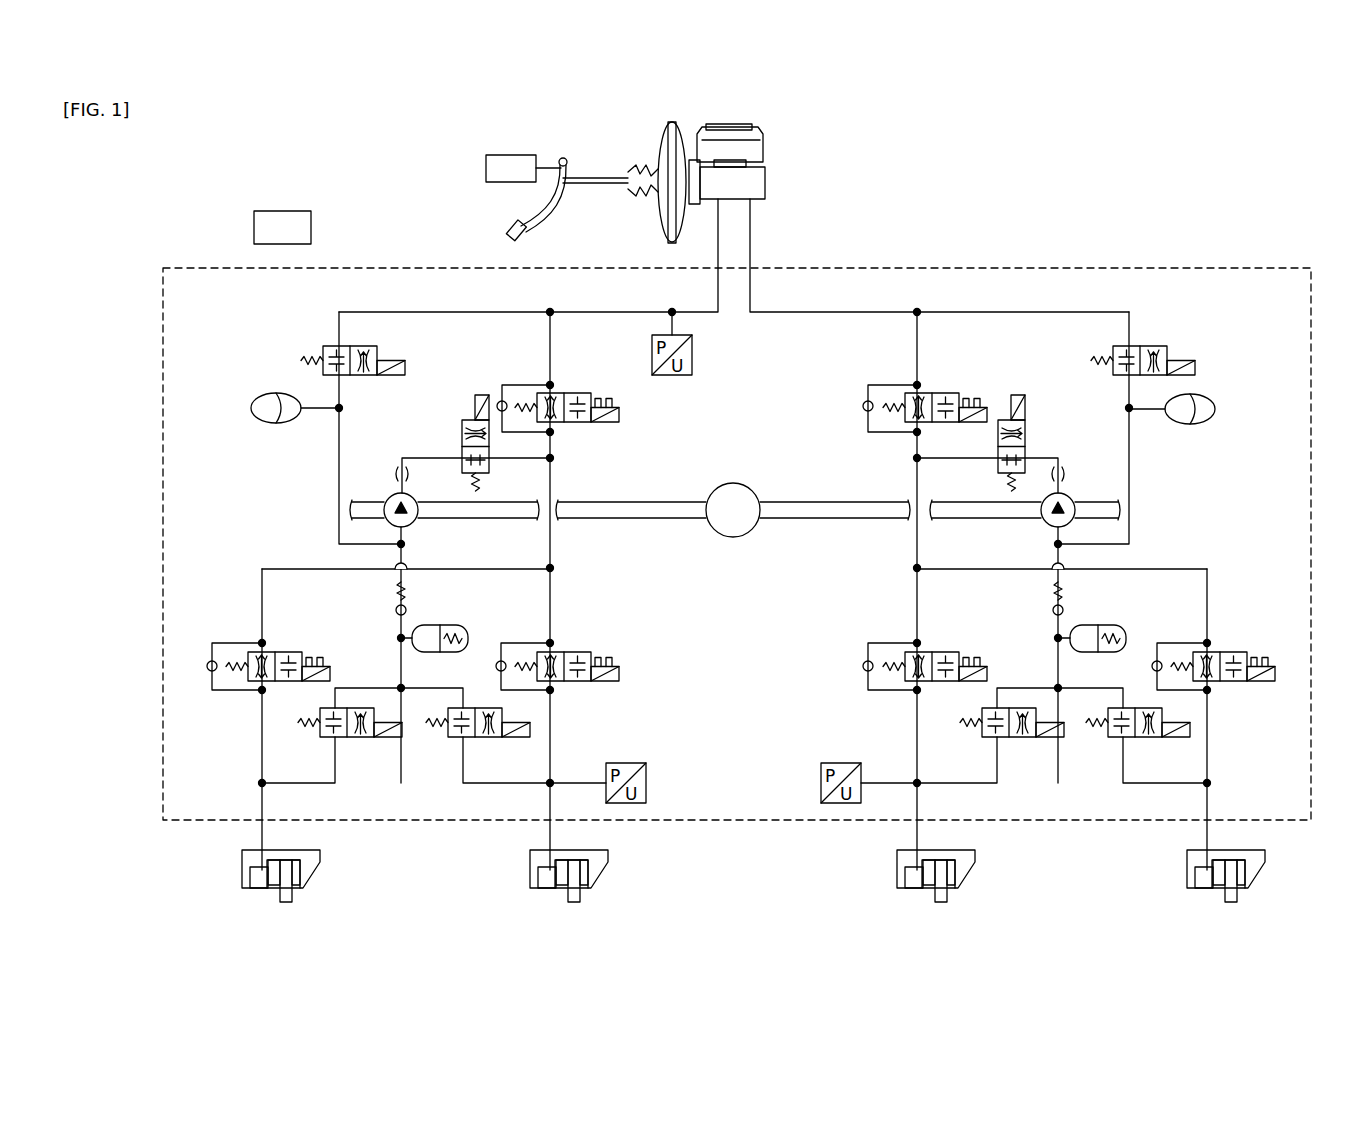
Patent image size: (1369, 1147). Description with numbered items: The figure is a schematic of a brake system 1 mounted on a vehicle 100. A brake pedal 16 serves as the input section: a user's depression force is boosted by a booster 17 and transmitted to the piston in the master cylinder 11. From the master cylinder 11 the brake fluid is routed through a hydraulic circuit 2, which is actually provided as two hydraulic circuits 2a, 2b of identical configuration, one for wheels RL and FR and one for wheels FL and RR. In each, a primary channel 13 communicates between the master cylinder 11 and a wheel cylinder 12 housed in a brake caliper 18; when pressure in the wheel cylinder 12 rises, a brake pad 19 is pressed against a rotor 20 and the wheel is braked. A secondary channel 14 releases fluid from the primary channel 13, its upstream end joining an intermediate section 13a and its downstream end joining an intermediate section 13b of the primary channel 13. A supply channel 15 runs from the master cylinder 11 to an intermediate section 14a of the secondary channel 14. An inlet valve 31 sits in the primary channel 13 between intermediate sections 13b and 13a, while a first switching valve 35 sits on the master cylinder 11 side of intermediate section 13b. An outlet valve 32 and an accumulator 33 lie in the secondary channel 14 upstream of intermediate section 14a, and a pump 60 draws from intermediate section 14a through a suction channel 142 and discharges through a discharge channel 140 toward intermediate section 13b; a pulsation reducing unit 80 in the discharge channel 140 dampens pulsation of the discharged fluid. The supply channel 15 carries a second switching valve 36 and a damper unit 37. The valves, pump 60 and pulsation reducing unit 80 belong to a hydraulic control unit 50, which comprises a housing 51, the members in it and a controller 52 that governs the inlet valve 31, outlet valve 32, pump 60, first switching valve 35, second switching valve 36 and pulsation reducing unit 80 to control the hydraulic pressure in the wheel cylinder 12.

The vehicle 100 is at (1236, 178).
The brake system 1 is at (1086, 230).
The hydraulic circuit 2 is at (734, 255).
The hydraulic circuit 2a is at (632, 302).
The hydraulic circuit 2b is at (833, 298).
The master cylinder 11 is at (766, 180).
The wheel cylinder 12 is at (252, 888).
The primary channel 13 is at (550, 330).
The intermediate section 13a is at (260, 783).
The intermediate section 13b is at (554, 461).
The secondary channel 14 is at (520, 457).
The intermediate section 14a is at (398, 547).
The supply channel 15 is at (338, 330).
The brake pedal 16 is at (510, 219).
The booster 17 is at (666, 158).
The brake caliper 18 is at (323, 885).
The brake pad 19 is at (274, 887).
The rotor 20 is at (288, 900).
The inlet valve 31 is at (297, 653).
The outlet valve 32 is at (368, 738).
The accumulator 33 is at (457, 625).
The first switching valve 35 is at (584, 393).
The second switching valve 36 is at (370, 346).
The damper unit 37 is at (267, 392).
The hydraulic control unit 50 is at (229, 221).
The housing 51 is at (195, 268).
The controller 52 is at (284, 210).
The pump 60 is at (412, 527).
The pulsation reducing unit 80 is at (476, 394).
The discharge channel 140 is at (420, 456).
The suction channel 142 is at (1023, 688).